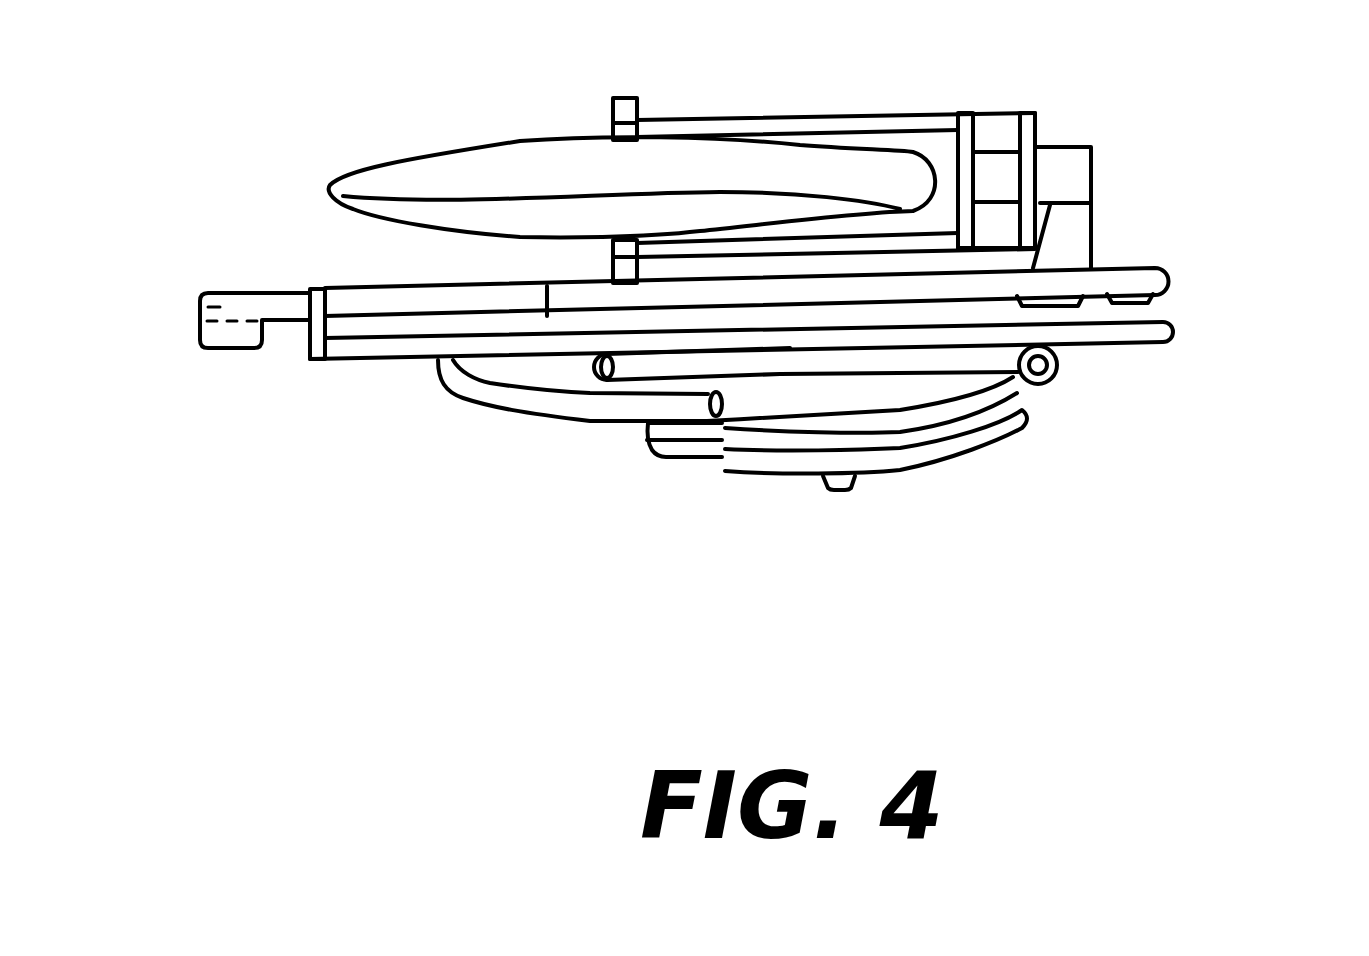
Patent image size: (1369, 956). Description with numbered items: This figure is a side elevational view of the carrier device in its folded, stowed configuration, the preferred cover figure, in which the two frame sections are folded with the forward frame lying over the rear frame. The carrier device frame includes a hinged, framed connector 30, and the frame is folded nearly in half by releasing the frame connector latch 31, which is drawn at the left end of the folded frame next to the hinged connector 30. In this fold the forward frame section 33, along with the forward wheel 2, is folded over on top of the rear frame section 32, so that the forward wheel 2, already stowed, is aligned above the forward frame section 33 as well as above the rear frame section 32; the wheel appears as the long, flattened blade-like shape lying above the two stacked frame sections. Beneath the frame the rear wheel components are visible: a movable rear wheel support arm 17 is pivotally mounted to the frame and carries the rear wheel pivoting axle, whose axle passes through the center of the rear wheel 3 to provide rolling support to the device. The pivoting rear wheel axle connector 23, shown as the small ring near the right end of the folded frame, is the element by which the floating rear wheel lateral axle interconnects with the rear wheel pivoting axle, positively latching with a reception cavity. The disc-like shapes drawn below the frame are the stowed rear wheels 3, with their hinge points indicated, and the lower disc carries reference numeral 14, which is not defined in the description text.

The forward wheel 2 is at (430, 172).
The rear wheel 3 is at (648, 452).
The lower disc / base plate 14 is at (716, 418).
The movable rear wheel support arm 17 is at (512, 410).
The pivoting rear wheel axle connector 23 is at (1058, 358).
The hinged framed connector 30 is at (310, 292).
The frame connector latch 31 is at (200, 307).
The rear frame section 32 is at (1178, 330).
The forward frame section 33 is at (1142, 278).